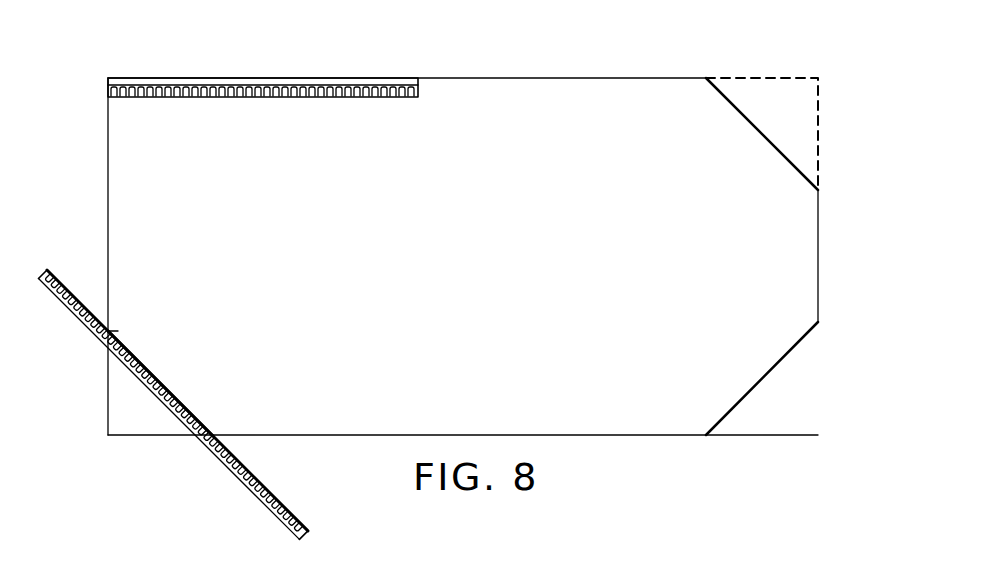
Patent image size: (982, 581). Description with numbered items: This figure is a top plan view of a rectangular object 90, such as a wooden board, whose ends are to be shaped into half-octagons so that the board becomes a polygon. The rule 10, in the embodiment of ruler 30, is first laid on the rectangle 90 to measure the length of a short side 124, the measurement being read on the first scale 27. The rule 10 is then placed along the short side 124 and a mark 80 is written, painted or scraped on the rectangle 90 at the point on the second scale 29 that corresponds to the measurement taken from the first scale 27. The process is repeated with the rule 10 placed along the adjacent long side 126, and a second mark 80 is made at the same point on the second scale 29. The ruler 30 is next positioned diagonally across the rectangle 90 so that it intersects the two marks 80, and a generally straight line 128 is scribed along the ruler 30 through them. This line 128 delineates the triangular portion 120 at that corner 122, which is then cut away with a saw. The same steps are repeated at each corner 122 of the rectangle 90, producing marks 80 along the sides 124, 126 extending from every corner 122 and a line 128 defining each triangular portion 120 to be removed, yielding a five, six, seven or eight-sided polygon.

The rule 10 is at (331, 43).
The first scale 27 is at (103, 96).
The second scale 29 is at (102, 85).
The ruler 30 is at (372, 79).
The marks 80 is at (213, 86).
The rectangular object 90 is at (539, 239).
The triangular portion 120 is at (790, 122).
The corner 122 is at (818, 78).
The short side 124 is at (108, 248).
The long side 126 is at (527, 80).
The straight line 128 is at (750, 126).